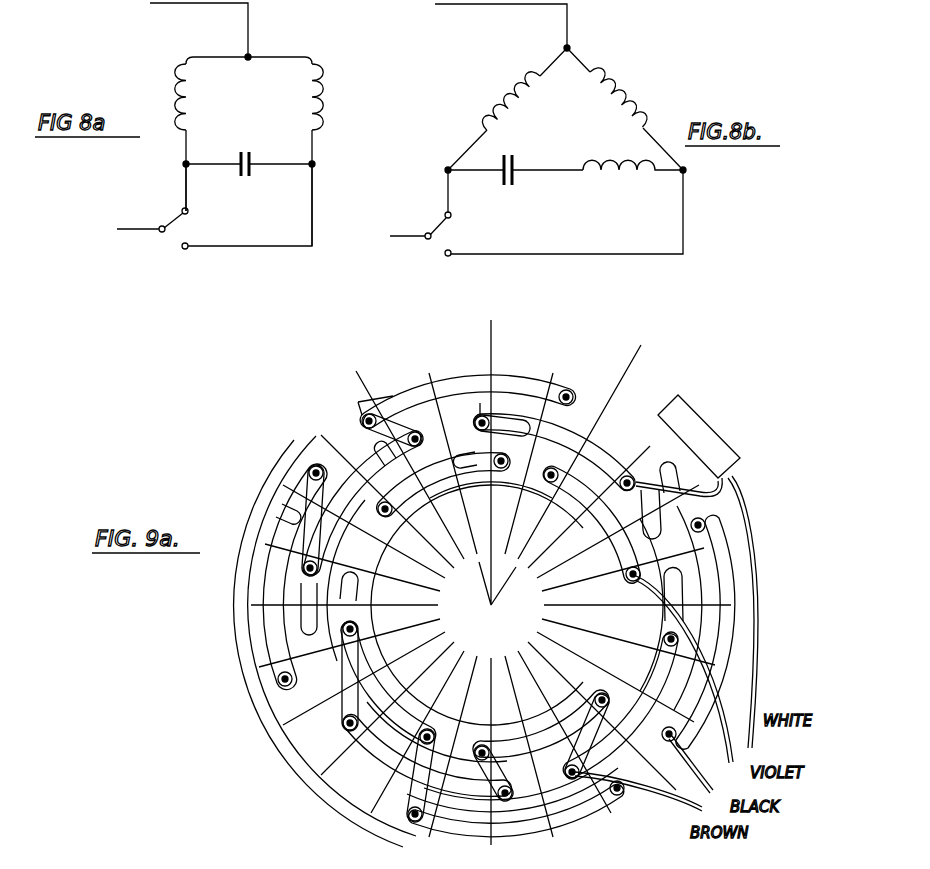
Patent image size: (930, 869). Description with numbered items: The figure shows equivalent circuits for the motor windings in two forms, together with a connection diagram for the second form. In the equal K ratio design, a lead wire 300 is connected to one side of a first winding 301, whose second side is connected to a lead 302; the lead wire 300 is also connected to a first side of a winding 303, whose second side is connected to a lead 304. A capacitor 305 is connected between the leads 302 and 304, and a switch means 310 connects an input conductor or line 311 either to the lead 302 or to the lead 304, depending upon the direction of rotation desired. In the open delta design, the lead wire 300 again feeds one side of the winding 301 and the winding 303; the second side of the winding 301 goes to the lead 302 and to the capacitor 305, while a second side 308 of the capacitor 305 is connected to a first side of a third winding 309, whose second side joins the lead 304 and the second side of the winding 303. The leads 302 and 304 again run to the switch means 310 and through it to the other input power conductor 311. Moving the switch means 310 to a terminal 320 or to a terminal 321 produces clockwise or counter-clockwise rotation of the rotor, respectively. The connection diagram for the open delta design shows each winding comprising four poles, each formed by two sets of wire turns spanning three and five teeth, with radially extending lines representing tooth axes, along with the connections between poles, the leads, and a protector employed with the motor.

In FIG. 8a, the lead wire 300 is at (185, 10).
In FIG. 8b, the lead wire 300 is at (470, 5).
In FIG. 8a, the first winding 301 is at (176, 90).
In FIG. 8b, the first winding 301 is at (505, 89).
In FIG. 9a, the first winding 301 is at (437, 388).
In FIG. 8a, the lead 302 is at (186, 182).
In FIG. 8b, the lead 302 is at (445, 179).
In FIG. 8a, the winding 303 is at (326, 94).
In FIG. 8b, the winding 303 is at (626, 96).
In FIG. 9a, the winding 303 is at (530, 408).
In FIG. 8a, the lead 304 is at (314, 203).
In FIG. 8b, the lead 304 is at (660, 257).
In FIG. 8a, the capacitor 305 is at (247, 150).
In FIG. 8b, the capacitor 305 is at (515, 152).
In FIG. 8b, the second side of the capacitor 308 is at (514, 184).
In FIG. 8b, the third winding 309 is at (620, 184).
In FIG. 9a, the third winding 309 is at (570, 463).
In FIG. 8a, the switch means 310 is at (165, 247).
In FIG. 8b, the switch means 310 is at (429, 254).
In FIG. 8a, the input conductor 311 is at (126, 236).
In FIG. 8b, the input conductor 311 is at (403, 240).
In FIG. 8a, the terminal 320 is at (181, 212).
In FIG. 8b, the terminal 320 is at (445, 214).
In FIG. 8a, the terminal 321 is at (184, 250).
In FIG. 8b, the terminal 321 is at (449, 258).